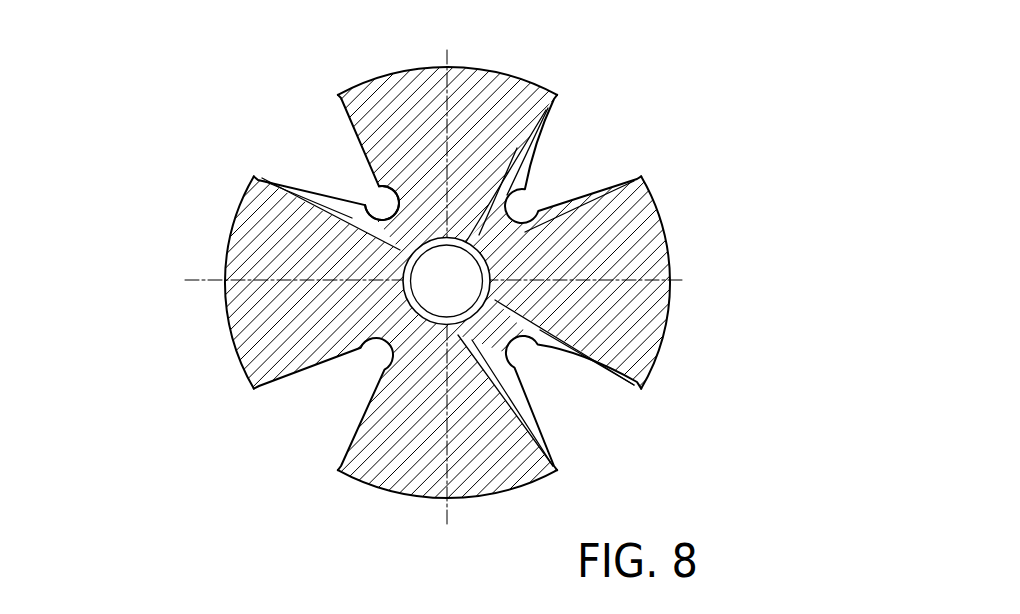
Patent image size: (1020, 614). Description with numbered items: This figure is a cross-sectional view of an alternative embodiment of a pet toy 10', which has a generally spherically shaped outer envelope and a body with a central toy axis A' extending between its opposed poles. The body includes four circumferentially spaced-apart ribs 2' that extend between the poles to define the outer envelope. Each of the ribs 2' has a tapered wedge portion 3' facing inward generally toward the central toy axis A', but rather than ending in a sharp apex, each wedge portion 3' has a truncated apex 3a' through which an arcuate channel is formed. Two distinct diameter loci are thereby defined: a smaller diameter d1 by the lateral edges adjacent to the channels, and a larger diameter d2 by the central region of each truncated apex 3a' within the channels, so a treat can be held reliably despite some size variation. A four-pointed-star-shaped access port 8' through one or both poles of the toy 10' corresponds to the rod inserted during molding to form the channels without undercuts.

The toy 10' is at (377, 286).
The ribs 2' is at (510, 297).
The wedge portion 3' is at (442, 255).
The truncated apex 3a' is at (503, 281).
The access port 8' is at (314, 131).
The smaller diameter locus d1 is at (482, 237).
The larger diameter locus d2 is at (500, 248).
The central toy axis A' is at (351, 385).